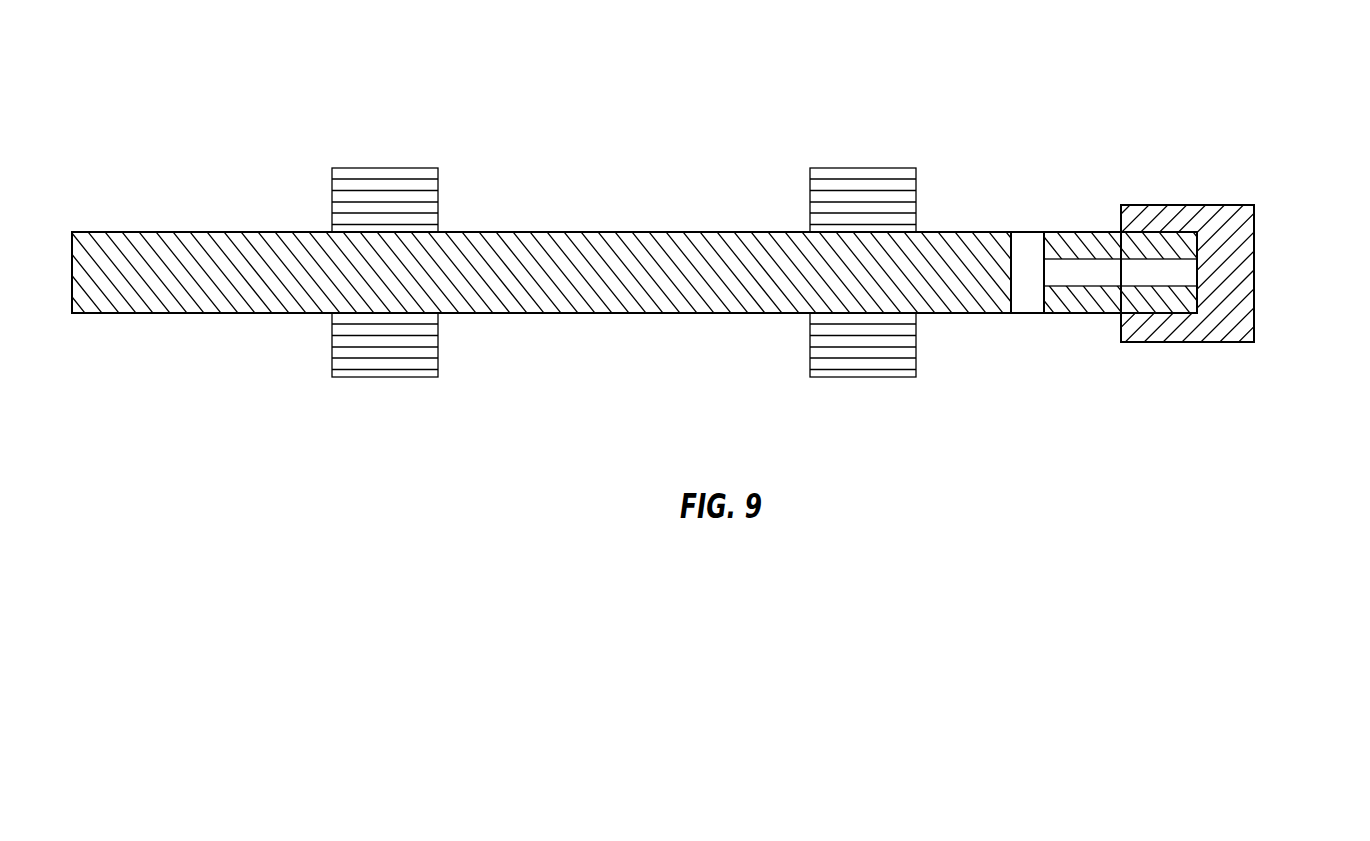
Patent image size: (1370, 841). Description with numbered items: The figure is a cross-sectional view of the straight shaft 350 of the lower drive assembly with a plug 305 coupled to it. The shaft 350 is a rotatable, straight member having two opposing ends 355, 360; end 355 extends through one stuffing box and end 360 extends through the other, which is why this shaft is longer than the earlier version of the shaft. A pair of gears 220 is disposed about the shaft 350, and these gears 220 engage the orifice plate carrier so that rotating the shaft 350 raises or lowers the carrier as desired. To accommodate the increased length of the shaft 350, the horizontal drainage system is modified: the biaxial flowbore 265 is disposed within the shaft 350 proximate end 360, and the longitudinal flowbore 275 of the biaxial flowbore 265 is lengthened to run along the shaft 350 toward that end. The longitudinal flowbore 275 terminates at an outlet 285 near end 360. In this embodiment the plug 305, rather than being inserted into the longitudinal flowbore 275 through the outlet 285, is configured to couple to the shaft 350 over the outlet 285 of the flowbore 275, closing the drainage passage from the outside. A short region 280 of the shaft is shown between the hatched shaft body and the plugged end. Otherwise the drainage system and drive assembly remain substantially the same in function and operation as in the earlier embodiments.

The straight shaft 350 is at (707, 83).
The end 355 is at (196, 232).
The gears 220 is at (385, 168).
The gap 280 is at (1004, 258).
The biaxial flowbore 265 is at (1088, 259).
The longitudinal flowbore 275 is at (1077, 290).
The outlet 285 is at (1200, 272).
The plug 305 is at (1255, 235).
The end 360 is at (1092, 315).